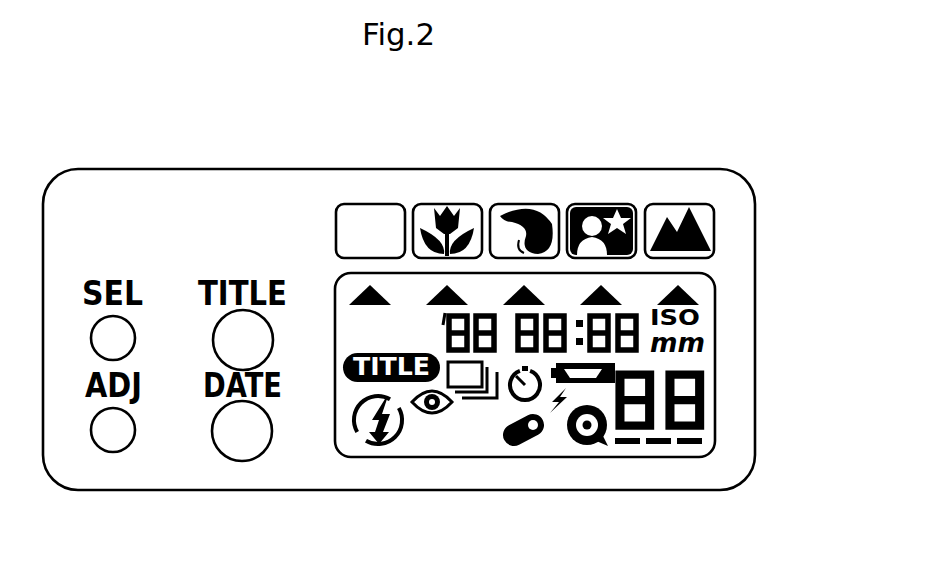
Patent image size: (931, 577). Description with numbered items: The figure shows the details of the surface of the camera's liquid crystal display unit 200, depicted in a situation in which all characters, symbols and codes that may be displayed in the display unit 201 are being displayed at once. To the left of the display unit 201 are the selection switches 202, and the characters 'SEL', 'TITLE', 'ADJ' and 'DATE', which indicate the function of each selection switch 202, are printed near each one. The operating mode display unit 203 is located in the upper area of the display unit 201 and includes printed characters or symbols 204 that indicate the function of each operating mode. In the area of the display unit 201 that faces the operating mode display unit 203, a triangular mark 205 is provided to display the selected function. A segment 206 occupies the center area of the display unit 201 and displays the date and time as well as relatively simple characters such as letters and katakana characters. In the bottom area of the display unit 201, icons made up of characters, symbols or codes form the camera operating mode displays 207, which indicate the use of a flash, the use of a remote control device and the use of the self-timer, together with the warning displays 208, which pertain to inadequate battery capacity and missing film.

The liquid crystal display unit 200 is at (764, 371).
The display unit 201 is at (672, 458).
The selection switches 202 is at (242, 462).
The operating mode display unit 203 is at (380, 204).
The printed characters or symbols 204 is at (524, 204).
The triangular mark 205 is at (702, 295).
The segment 206 is at (442, 328).
The camera operating mode displays 207 is at (452, 450).
The warning displays 208 is at (585, 448).